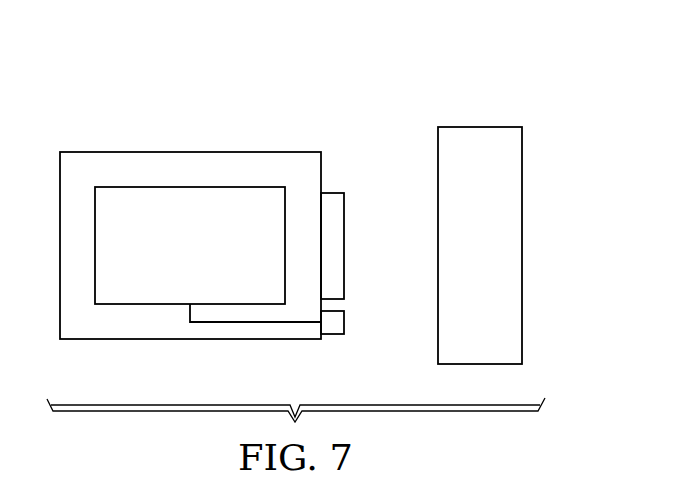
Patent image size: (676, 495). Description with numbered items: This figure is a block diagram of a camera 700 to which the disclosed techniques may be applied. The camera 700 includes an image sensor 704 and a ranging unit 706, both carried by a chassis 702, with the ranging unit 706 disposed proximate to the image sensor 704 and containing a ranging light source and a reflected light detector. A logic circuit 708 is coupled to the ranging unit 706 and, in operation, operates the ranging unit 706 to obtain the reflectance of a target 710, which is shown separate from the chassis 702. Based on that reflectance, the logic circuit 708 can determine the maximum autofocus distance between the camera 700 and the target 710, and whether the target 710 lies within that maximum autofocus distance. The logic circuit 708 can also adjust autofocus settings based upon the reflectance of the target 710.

The camera 700 is at (466, 71).
The chassis 702 is at (190, 151).
The image sensor 704 is at (344, 246).
The ranging unit 706 is at (330, 335).
The logic circuit 708 is at (213, 280).
The target 710 is at (503, 263).